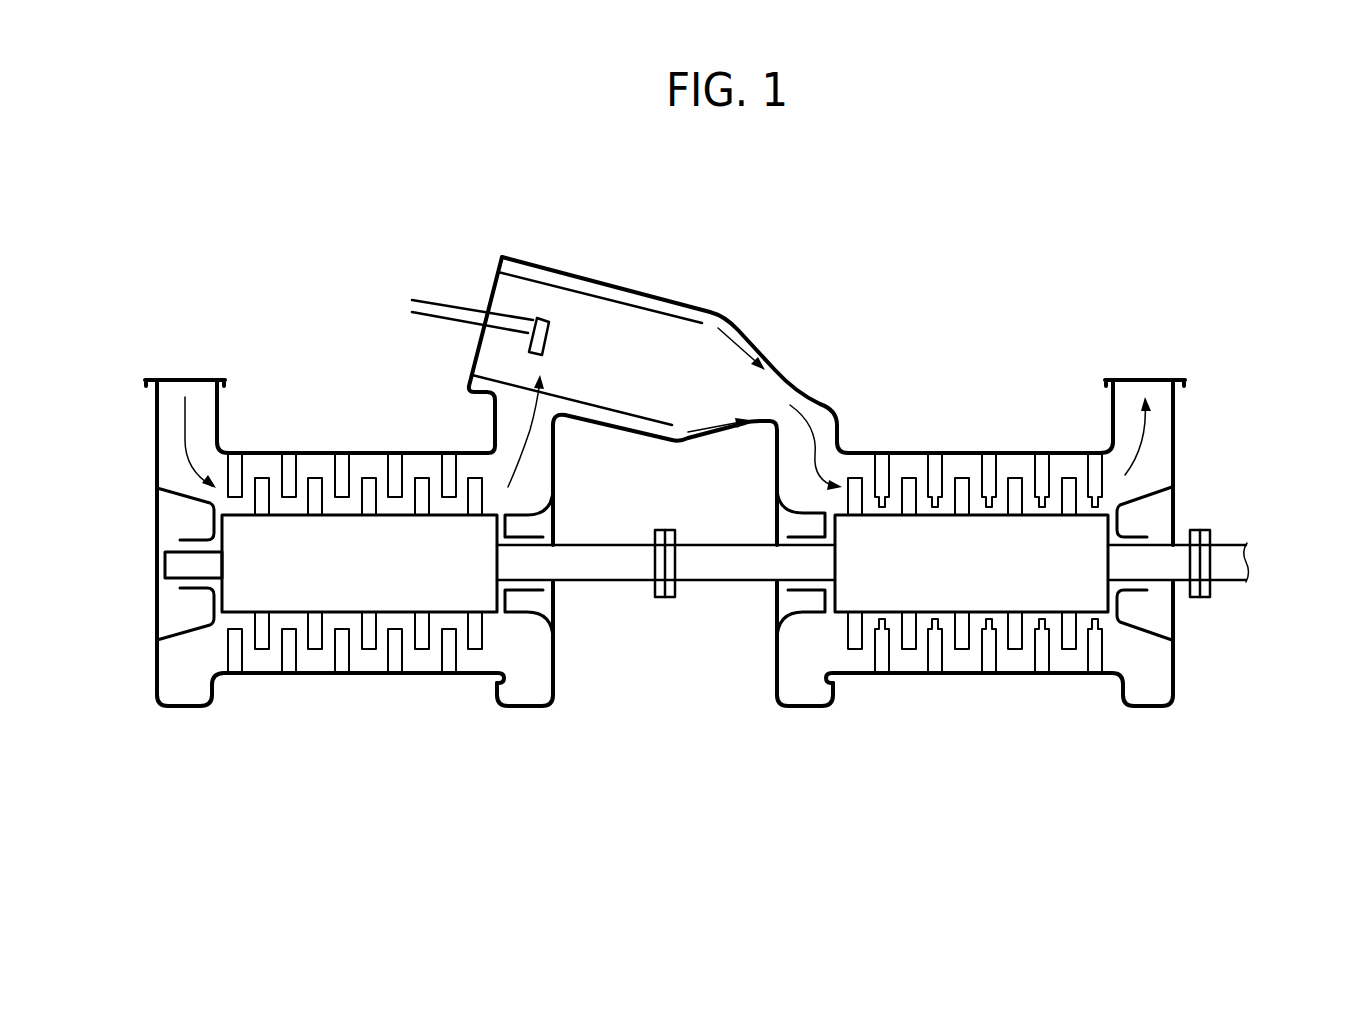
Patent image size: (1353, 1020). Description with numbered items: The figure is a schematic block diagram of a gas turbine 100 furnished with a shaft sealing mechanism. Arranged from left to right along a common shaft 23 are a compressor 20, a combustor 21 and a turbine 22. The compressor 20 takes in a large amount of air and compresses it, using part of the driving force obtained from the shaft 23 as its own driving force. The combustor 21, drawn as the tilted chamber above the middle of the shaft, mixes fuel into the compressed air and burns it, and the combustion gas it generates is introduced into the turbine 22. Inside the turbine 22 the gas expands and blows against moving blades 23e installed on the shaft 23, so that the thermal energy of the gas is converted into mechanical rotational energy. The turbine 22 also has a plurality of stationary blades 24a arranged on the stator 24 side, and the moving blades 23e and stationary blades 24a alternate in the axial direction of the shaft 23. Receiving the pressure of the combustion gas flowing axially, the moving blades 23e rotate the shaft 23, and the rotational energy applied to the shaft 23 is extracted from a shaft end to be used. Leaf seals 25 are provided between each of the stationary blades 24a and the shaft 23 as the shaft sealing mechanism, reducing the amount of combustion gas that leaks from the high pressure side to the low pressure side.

The gas turbine 100 is at (1036, 256).
The compressor 20 is at (155, 748).
The combustor 21 is at (838, 232).
The turbine 22 is at (1173, 748).
The shaft 23 is at (715, 583).
The moving blades 23e is at (965, 476).
The stator 24 is at (965, 675).
The stationary blades 24a is at (925, 472).
The leaf seals 25 is at (988, 515).